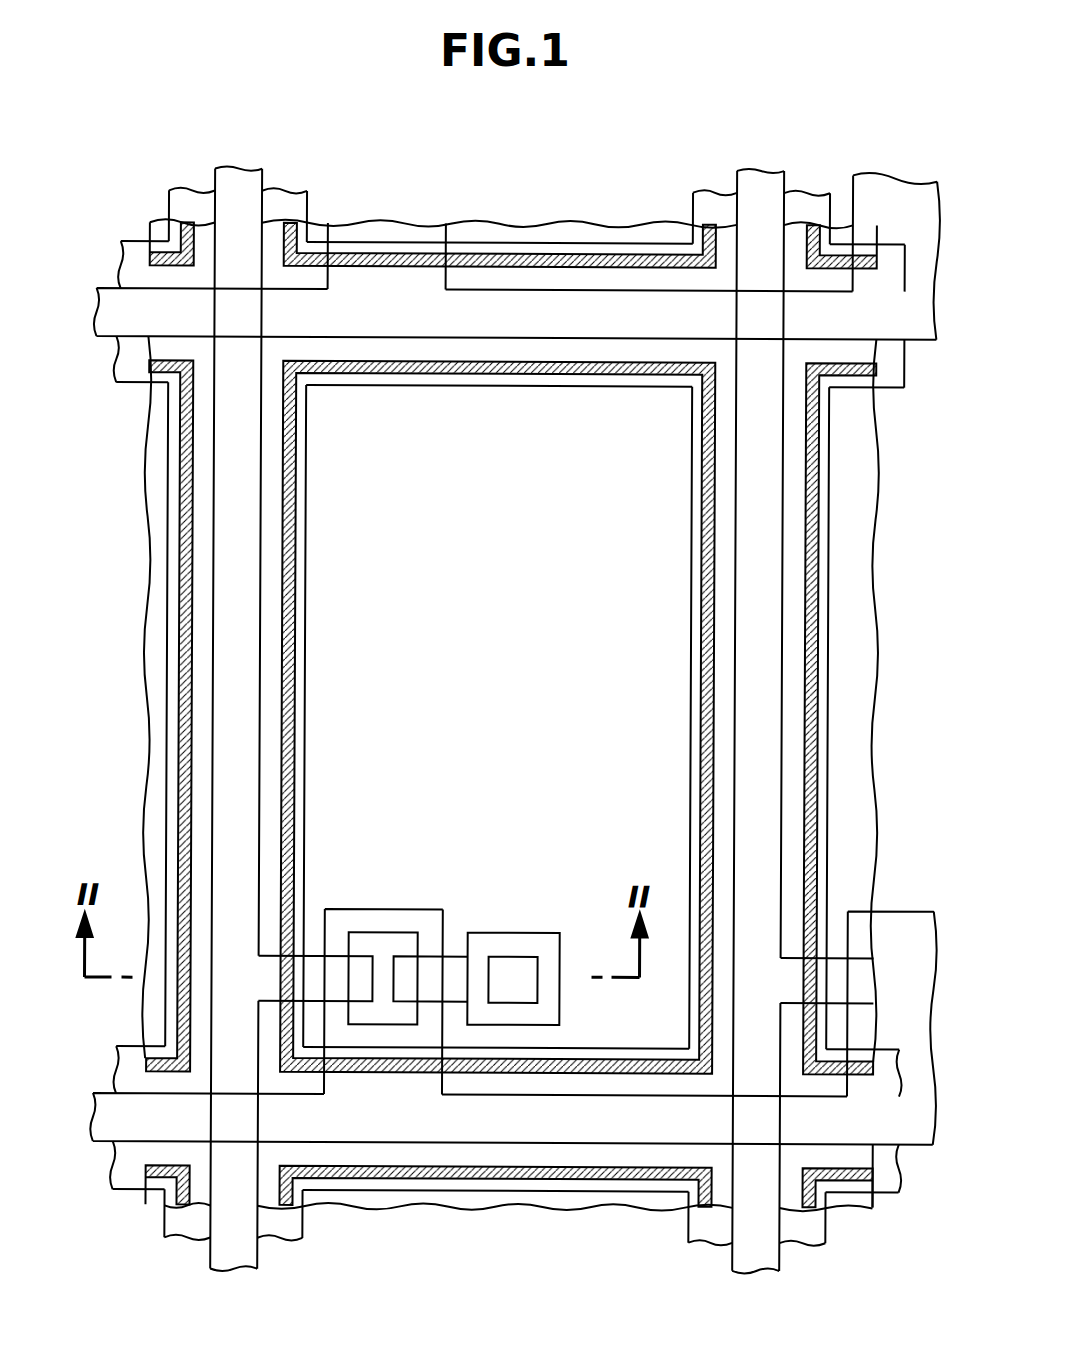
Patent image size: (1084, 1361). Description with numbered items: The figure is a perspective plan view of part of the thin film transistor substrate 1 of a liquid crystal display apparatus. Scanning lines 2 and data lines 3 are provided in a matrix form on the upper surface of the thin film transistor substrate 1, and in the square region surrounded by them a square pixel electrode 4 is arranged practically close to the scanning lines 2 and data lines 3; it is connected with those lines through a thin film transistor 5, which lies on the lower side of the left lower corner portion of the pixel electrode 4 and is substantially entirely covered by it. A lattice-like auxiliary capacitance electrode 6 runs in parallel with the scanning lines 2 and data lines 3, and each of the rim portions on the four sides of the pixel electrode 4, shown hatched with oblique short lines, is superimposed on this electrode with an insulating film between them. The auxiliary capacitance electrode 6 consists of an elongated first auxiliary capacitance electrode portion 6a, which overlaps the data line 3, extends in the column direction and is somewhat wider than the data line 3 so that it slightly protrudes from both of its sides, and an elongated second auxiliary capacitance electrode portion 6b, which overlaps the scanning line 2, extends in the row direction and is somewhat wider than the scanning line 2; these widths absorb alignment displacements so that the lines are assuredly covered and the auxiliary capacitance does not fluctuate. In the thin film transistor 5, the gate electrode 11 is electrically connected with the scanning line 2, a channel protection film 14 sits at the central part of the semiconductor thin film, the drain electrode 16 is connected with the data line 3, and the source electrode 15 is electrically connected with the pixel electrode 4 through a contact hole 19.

The thin film transistor substrate 1 is at (609, 194).
The scanning line 2 is at (108, 325).
The data line 3 is at (233, 200).
The pixel electrode 4 is at (714, 565).
The thin film transistor 5 is at (455, 891).
The auxiliary capacitance electrode 6 is at (188, 210).
The first auxiliary capacitance electrode portion 6a is at (304, 640).
The second auxiliary capacitance electrode portion 6b is at (530, 385).
The gate electrode 11 is at (368, 950).
The channel protection film 14 is at (404, 950).
The source electrode 15 is at (507, 940).
The drain electrode 16 is at (316, 975).
The contact hole 19 is at (530, 975).